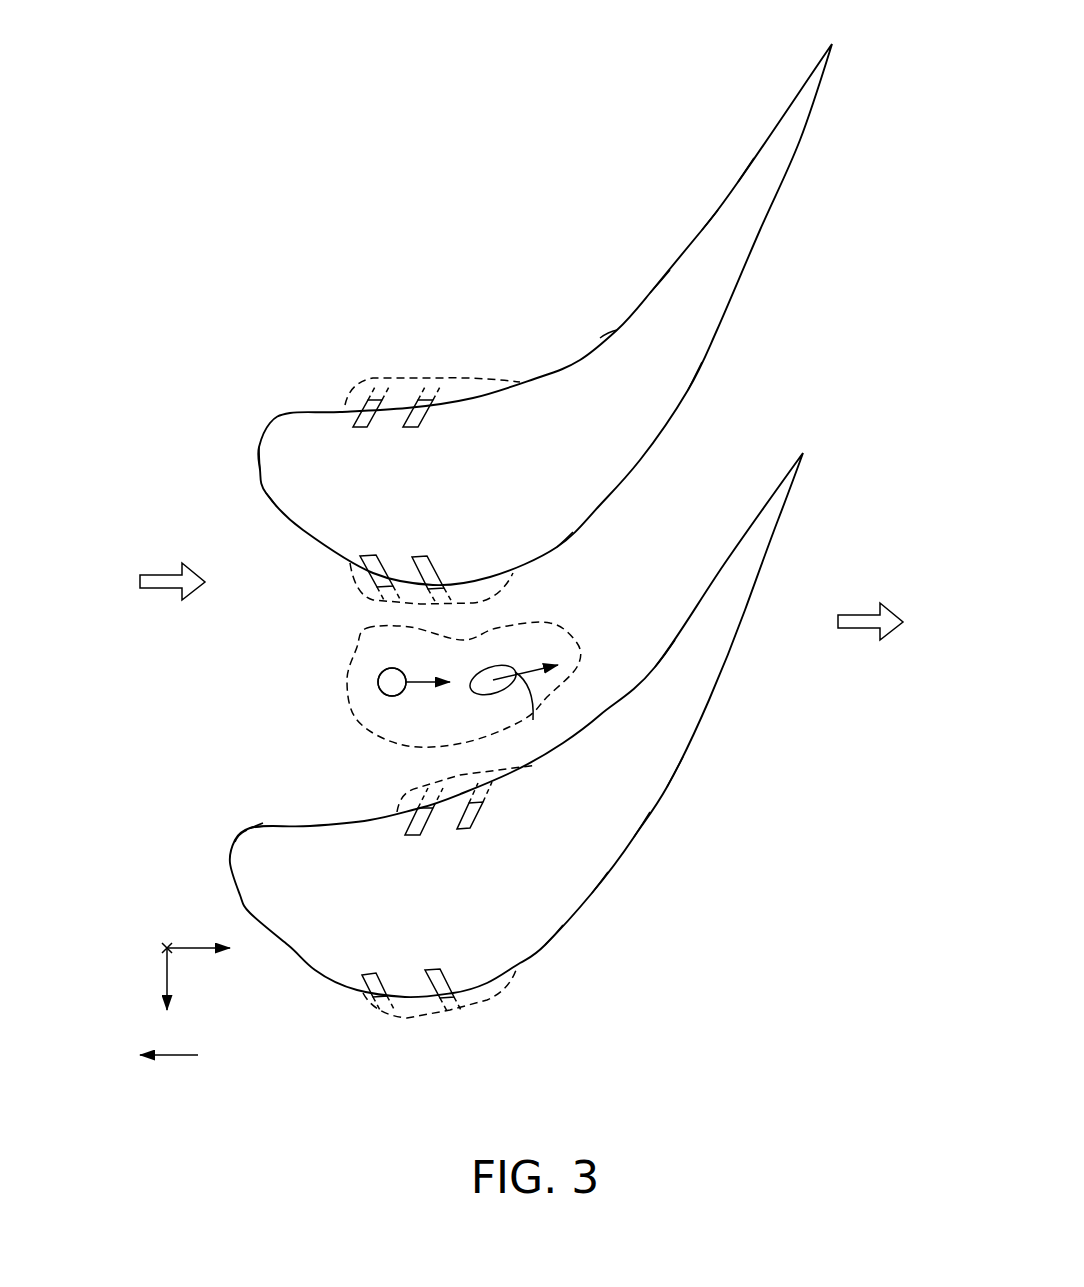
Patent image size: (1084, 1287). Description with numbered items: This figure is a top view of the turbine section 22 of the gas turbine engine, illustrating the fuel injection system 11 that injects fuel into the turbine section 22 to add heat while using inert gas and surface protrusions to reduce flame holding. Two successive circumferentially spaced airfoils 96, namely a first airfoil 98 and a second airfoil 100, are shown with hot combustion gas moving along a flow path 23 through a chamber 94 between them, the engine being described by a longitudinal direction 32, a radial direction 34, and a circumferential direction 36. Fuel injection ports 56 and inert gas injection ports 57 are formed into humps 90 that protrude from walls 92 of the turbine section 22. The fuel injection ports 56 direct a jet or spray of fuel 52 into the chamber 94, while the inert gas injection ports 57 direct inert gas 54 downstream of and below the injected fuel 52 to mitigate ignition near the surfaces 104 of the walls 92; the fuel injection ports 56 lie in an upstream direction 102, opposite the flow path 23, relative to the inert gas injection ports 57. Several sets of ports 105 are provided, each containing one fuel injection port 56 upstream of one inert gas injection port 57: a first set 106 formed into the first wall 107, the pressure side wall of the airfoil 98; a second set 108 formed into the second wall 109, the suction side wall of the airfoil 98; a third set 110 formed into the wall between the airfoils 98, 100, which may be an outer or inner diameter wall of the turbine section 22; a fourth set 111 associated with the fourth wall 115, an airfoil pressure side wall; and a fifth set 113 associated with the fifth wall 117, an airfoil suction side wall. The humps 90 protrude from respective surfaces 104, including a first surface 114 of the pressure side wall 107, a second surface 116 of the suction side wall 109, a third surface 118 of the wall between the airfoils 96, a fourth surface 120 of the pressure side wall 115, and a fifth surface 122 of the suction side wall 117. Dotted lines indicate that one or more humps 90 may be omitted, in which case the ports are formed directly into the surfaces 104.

The fuel injection system 11 is at (375, 128).
The turbine section 22 is at (337, 276).
The flow path 23 is at (160, 575).
The longitudinal direction 32 is at (190, 947).
The radial direction 34 is at (163, 945).
The circumferential direction 36 is at (163, 975).
The fuel 52 is at (413, 680).
The inert gas 54 is at (532, 713).
The fuel injection port 56 is at (387, 670).
The inert gas injection port 57 is at (490, 667).
The hump 90 is at (403, 376).
The wall 92 is at (600, 338).
The chamber 94 is at (677, 537).
The airfoils 96 is at (778, 333).
The airfoil 98 is at (440, 492).
The airfoil 100 is at (408, 899).
The upstream direction 102 is at (175, 1057).
The surface 104 is at (650, 293).
The set of ports 105 is at (790, 390).
The first set 106 is at (372, 362).
The first wall 107 is at (702, 230).
The second set 108 is at (512, 592).
The second wall 109 is at (573, 532).
The third set 110 is at (337, 698).
The fourth set 111 is at (385, 785).
The fifth set 113 is at (420, 1028).
The first surface 114 is at (738, 182).
The fourth wall 115 is at (650, 667).
The second surface 116 is at (688, 390).
The fifth wall 117 is at (632, 842).
The third surface 118 is at (190, 687).
The fourth surface 120 is at (272, 824).
The fifth surface 122 is at (665, 792).